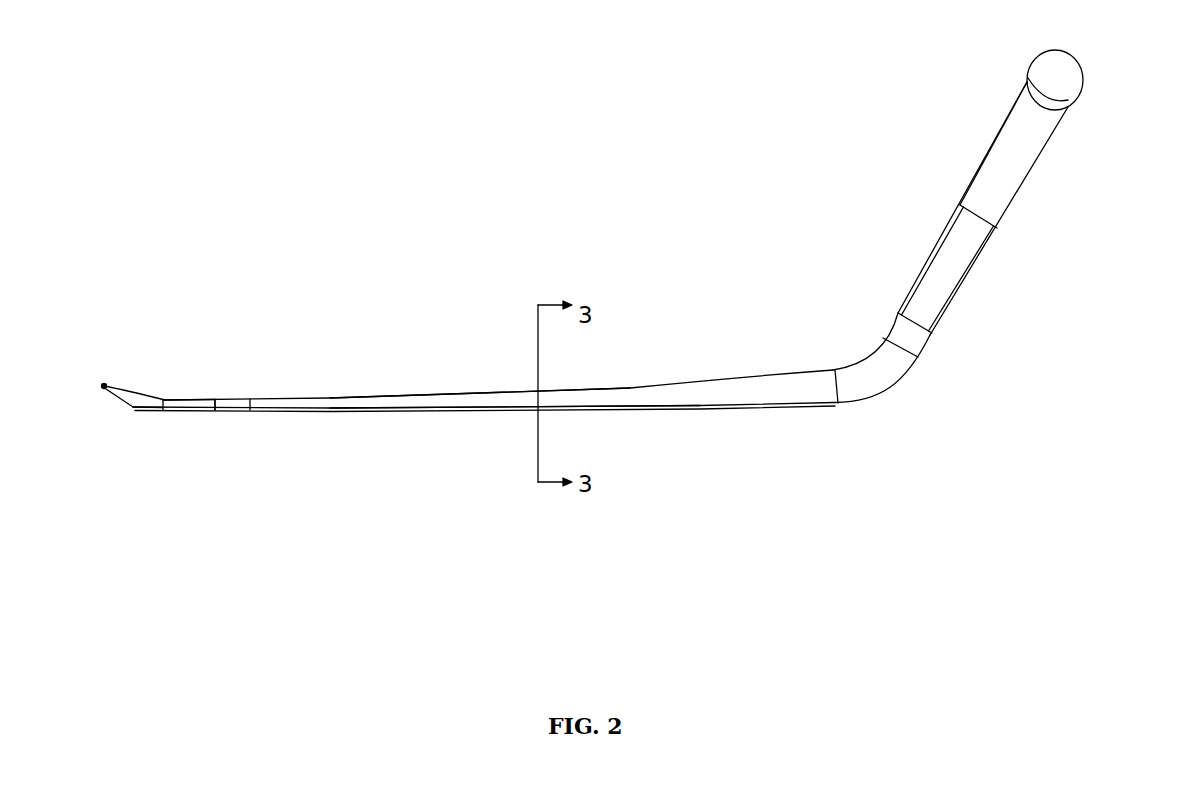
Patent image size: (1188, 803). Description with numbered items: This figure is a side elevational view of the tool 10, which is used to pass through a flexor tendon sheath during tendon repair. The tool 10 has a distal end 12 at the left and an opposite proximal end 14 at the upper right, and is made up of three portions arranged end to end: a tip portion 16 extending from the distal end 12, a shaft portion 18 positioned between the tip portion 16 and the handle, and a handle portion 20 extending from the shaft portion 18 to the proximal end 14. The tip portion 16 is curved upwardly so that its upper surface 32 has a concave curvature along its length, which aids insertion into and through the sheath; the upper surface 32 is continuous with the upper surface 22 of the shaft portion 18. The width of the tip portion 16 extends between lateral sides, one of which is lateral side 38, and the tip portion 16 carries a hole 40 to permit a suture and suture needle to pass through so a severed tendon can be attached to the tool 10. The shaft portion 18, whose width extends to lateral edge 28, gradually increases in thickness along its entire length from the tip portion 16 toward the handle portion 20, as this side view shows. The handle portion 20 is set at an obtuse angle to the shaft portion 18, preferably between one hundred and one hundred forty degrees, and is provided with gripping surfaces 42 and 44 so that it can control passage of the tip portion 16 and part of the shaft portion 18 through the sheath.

The tool 10 is at (593, 254).
The distal end 12 is at (102, 385).
The proximal end 14 is at (1047, 98).
The tip portion 16 is at (134, 407).
The shaft portion 18 is at (609, 393).
The handle portion 20 is at (1019, 208).
The upper surface 22 is at (788, 392).
The lateral edge 28 is at (700, 407).
The upper surface 32 is at (212, 411).
The lateral side 38 is at (118, 403).
The hole 40 is at (174, 402).
The gripping surface 42 is at (995, 138).
The gripping surface 44 is at (1032, 177).